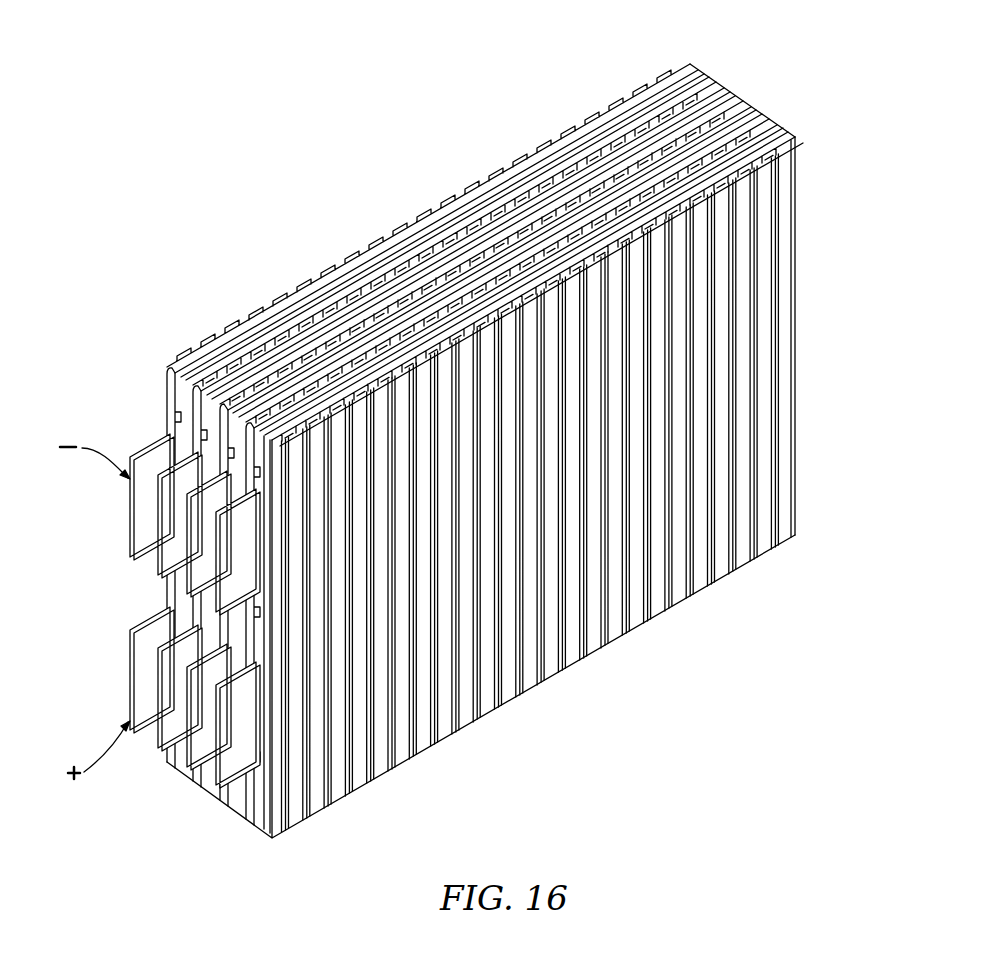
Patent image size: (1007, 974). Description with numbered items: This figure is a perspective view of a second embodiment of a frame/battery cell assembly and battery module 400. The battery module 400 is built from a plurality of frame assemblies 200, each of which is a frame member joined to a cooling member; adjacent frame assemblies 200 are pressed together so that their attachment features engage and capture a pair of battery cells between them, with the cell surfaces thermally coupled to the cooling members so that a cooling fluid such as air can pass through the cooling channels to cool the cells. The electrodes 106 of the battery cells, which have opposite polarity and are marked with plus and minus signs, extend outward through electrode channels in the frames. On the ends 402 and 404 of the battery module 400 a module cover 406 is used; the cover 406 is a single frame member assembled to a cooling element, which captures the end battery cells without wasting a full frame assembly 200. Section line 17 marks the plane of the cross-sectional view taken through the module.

The battery module 400 is at (474, 427).
The frame assembly 200 is at (718, 70).
The end of battery module 404 is at (387, 228).
The module cover 406 is at (797, 264).
The end of battery module 402 is at (676, 612).
The electrode 106 is at (124, 507).
The section 17- 17 is at (155, 583).